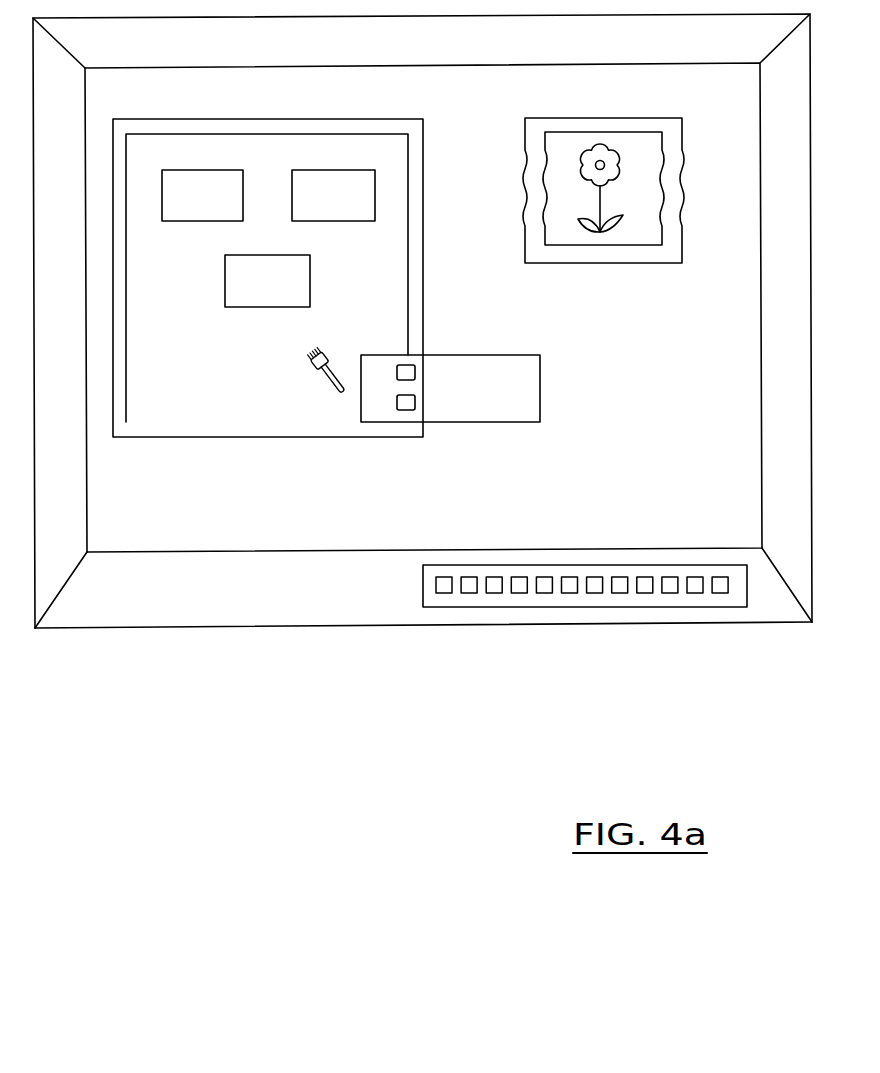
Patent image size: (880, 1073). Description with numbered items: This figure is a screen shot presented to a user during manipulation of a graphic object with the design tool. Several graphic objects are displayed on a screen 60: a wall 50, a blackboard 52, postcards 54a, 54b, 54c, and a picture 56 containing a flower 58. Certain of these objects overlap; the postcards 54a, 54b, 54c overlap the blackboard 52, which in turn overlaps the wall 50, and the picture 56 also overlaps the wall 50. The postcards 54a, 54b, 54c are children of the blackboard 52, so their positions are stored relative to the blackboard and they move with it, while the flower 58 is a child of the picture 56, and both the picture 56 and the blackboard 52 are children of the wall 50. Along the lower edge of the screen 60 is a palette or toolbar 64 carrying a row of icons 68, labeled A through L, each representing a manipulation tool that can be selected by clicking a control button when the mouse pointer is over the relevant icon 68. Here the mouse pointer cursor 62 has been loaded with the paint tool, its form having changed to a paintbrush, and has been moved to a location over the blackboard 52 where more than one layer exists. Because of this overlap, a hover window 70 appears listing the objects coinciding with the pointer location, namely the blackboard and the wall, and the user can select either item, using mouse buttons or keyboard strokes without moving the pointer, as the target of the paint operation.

The wall 50 is at (178, 538).
The blackboard 52 is at (175, 440).
The postcard 54a is at (195, 222).
The postcard 54b is at (250, 308).
The postcard 54c is at (345, 222).
The picture 56 is at (684, 140).
The flower 58 is at (620, 227).
The screen 60 is at (788, 624).
The mouse pointer cursor 62 is at (322, 388).
The palette or toolbar 64 is at (585, 627).
The icon 68 is at (570, 596).
The hover window 70 is at (543, 400).